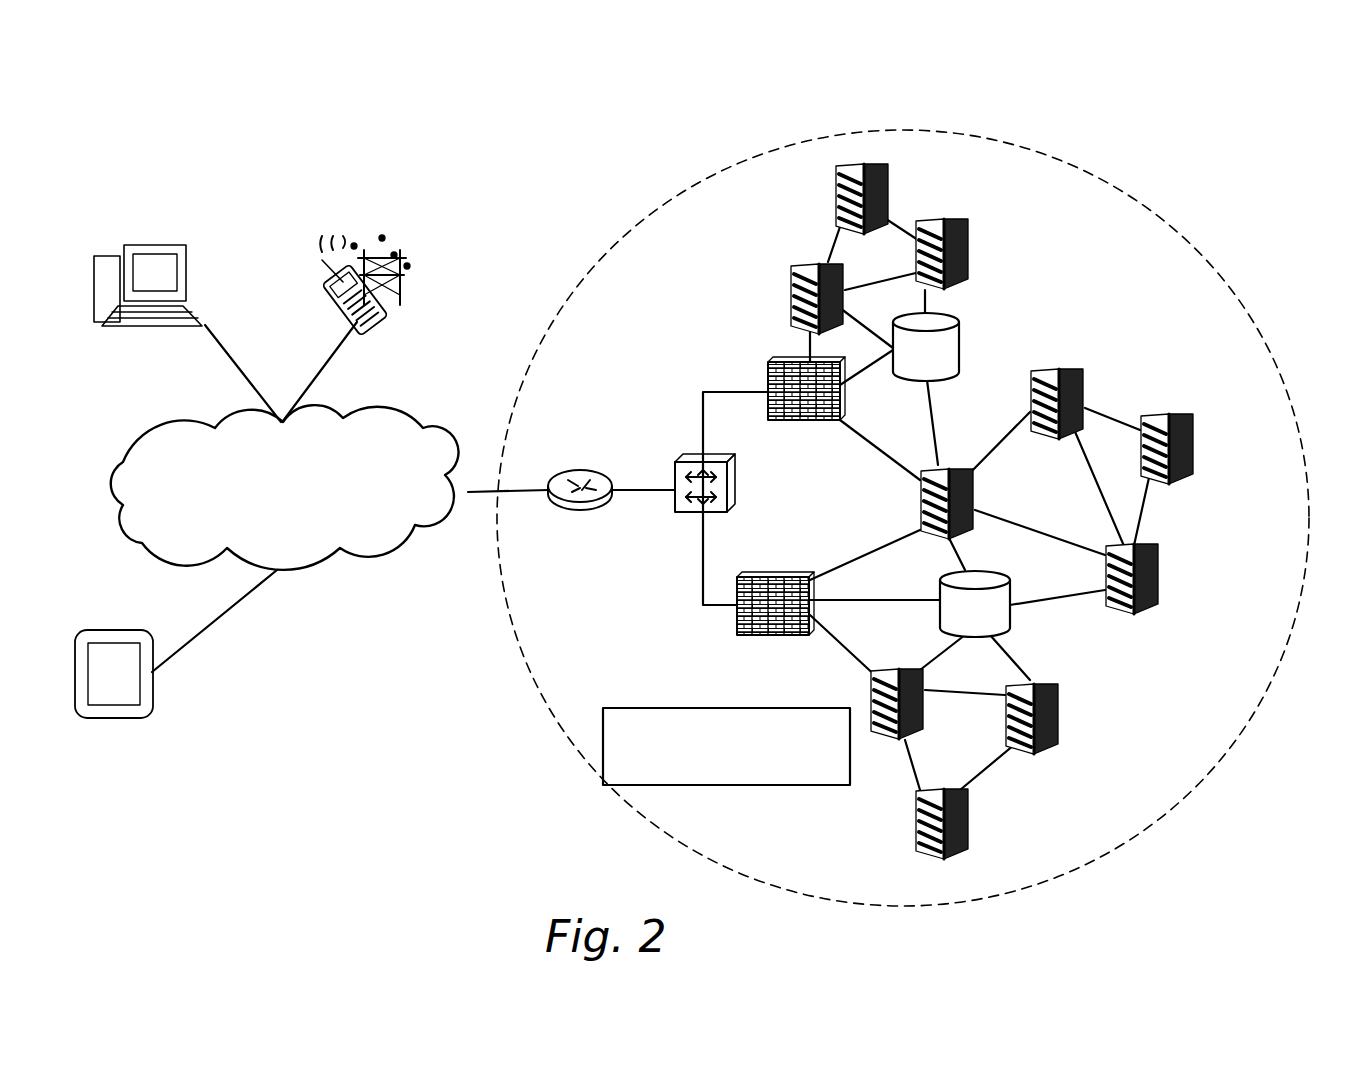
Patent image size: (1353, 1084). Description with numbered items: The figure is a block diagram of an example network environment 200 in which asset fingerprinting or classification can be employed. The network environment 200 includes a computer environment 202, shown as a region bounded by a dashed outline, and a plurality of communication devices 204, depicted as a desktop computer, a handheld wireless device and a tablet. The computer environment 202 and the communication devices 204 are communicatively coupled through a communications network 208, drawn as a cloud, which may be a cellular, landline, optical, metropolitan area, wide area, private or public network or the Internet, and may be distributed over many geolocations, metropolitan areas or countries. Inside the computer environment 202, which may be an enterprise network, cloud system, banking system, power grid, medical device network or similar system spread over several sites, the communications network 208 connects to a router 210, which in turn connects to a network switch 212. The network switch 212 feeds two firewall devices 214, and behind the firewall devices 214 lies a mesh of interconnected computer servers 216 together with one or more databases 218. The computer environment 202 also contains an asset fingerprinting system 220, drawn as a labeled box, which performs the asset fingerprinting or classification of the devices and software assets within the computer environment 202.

The network environment 200 is at (405, 92).
The computer environment 202 is at (905, 130).
The communication devices 204 is at (148, 245).
The communications network 208 is at (305, 522).
The router 210 is at (575, 462).
The network switch 212 is at (698, 515).
The firewall devices 214 is at (770, 367).
The computer servers 216 is at (840, 172).
The databases 218 is at (962, 338).
The asset fingerprinting system 220 is at (703, 787).